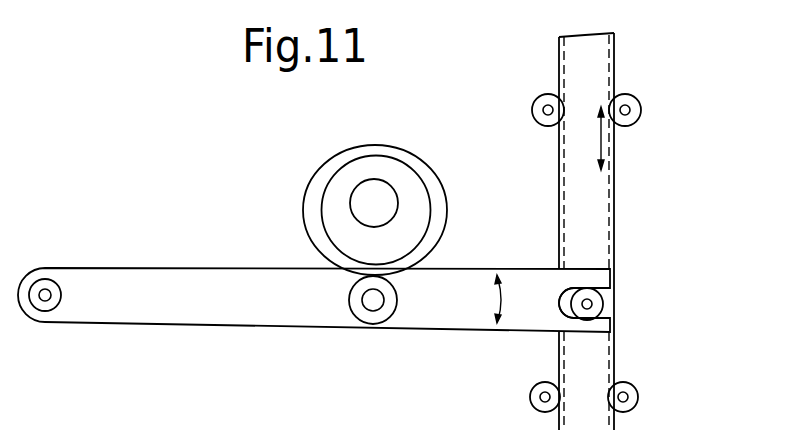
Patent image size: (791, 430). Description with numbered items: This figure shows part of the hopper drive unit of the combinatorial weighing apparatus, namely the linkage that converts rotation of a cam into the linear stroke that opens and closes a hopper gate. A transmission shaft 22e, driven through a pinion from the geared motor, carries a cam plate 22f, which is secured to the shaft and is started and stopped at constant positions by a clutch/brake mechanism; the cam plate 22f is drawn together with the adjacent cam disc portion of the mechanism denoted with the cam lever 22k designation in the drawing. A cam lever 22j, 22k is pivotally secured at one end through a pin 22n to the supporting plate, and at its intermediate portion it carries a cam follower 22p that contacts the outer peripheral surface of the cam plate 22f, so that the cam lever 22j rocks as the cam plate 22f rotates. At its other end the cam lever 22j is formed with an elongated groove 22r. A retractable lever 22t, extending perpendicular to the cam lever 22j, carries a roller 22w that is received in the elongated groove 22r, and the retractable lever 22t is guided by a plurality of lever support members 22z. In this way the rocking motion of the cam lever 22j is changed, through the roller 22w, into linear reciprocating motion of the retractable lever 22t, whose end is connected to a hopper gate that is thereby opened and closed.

The retractable lever 22t is at (605, 186).
The cam lever 22j is at (172, 317).
The pin 22n is at (45, 299).
The cam plate 22f is at (437, 207).
The cam lever 22k is at (385, 157).
The transmission shaft 22e is at (387, 192).
The cam follower 22p is at (365, 318).
The elongated groove 22r is at (608, 292).
The roller 22w is at (603, 306).
The lever support member 22z is at (537, 97).